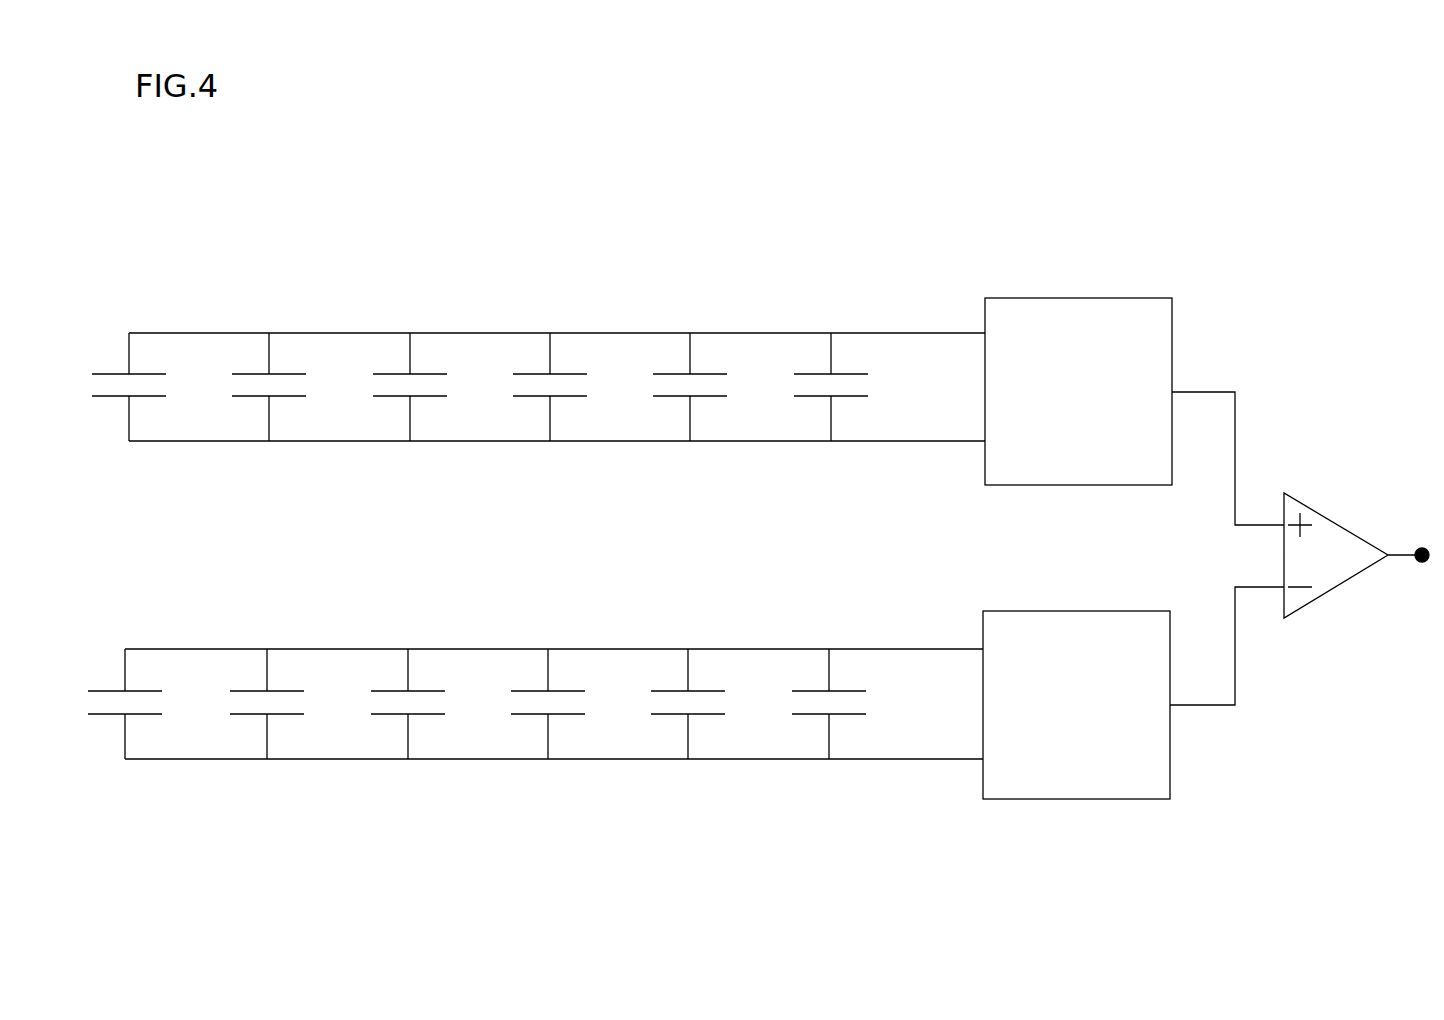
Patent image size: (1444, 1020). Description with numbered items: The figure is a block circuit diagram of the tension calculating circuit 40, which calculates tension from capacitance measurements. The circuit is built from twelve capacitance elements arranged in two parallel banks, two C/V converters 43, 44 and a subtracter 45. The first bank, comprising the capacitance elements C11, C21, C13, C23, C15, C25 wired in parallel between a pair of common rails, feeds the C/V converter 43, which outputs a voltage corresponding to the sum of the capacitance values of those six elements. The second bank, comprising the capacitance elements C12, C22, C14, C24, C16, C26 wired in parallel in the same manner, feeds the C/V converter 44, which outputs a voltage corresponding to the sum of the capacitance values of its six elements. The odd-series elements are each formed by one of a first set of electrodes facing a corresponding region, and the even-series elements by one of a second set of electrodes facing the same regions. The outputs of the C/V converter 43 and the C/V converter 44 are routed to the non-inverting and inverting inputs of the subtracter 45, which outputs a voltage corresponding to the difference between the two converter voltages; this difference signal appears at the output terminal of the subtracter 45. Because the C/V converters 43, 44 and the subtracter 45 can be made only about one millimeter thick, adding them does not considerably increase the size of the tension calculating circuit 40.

The tension calculating circuit 40 is at (1331, 340).
The C/V converter 43 is at (1097, 315).
The C/V converter 44 is at (1058, 789).
The subtracter 45 is at (1333, 523).
The capacitance element C11 is at (146, 374).
The capacitance element C21 is at (286, 374).
The capacitance element C13 is at (427, 374).
The capacitance element C23 is at (567, 374).
The capacitance element C15 is at (707, 374).
The capacitance element C25 is at (848, 374).
The capacitance element C12 is at (142, 691).
The capacitance element C22 is at (284, 691).
The capacitance element C14 is at (425, 691).
The capacitance element C24 is at (565, 691).
The capacitance element C16 is at (705, 691).
The capacitance element C26 is at (846, 691).